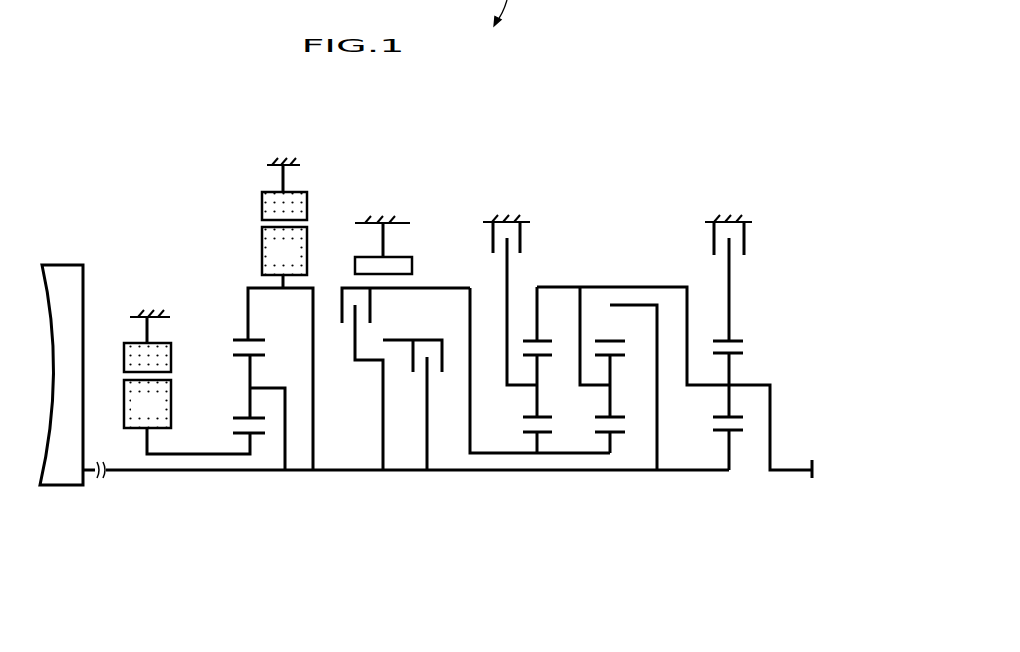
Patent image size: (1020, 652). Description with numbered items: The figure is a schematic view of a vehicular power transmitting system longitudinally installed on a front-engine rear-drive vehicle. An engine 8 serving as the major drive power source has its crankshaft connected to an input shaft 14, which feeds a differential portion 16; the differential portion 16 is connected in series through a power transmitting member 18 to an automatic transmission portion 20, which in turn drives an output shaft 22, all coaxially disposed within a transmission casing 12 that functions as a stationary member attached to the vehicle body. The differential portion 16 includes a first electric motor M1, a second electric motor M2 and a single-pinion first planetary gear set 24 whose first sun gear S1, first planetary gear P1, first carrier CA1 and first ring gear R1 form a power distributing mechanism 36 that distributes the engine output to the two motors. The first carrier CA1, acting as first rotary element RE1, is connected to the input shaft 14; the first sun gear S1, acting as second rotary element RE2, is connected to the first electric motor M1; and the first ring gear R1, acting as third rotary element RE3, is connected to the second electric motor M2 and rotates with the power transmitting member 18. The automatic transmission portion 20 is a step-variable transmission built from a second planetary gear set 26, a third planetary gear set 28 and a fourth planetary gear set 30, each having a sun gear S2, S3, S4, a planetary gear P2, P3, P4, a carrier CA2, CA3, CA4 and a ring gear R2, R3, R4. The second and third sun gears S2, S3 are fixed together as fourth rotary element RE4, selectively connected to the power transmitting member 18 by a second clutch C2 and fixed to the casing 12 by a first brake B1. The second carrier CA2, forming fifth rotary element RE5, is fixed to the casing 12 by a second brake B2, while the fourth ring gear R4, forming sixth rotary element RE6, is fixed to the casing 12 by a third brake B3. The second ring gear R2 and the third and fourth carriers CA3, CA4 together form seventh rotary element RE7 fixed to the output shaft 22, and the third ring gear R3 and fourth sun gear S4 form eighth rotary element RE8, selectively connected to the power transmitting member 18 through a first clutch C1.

The engine 8 is at (60, 272).
The transmission casing 12 is at (152, 315).
The input shaft 14 is at (172, 472).
The differential portion 16 is at (276, 176).
The power transmitting member 18 is at (336, 472).
The automatic transmission portion 20 is at (631, 329).
The output shaft 22 is at (790, 465).
The first planetary gear set 24 is at (263, 410).
The second planetary gear set 26 is at (534, 423).
The third planetary gear set 28 is at (603, 414).
The fourth planetary gear set 30 is at (744, 362).
The power distributing mechanism 36 is at (187, 308).
The first electric motor M1 is at (147, 372).
The second electric motor M2 is at (284, 220).
The first brake B1 is at (383, 234).
The second brake B2 is at (506, 224).
The third brake B3 is at (729, 225).
The first clutch C1 is at (412, 395).
The second clutch C2 is at (406, 305).
The first rotary element RE1 is at (291, 477).
The second rotary element RE2 is at (191, 445).
The third rotary element RE3 is at (242, 300).
The fourth rotary element RE4 is at (477, 478).
The fifth rotary element RE5 is at (489, 290).
The sixth rotary element RE6 is at (768, 268).
The seventh rotary element RE7 is at (599, 276).
The eighth rotary element RE8 is at (386, 460).
The first ring gear R1 is at (258, 340).
The second ring gear R2 is at (541, 340).
The third ring gear R3 is at (614, 340).
The fourth ring gear R4 is at (723, 338).
The first carrier CA1 is at (258, 388).
The second carrier CA2 is at (528, 388).
The third carrier CA3 is at (598, 385).
The fourth carrier CA4 is at (713, 388).
The first planetary gear P1 is at (243, 425).
The second planetary gear P2 is at (543, 421).
The third planetary gear P3 is at (618, 424).
The fourth planetary gear P4 is at (735, 424).
The first sun gear S1 is at (253, 437).
The second sun gear S2 is at (528, 430).
The third sun gear S3 is at (614, 436).
The fourth sun gear S4 is at (723, 431).